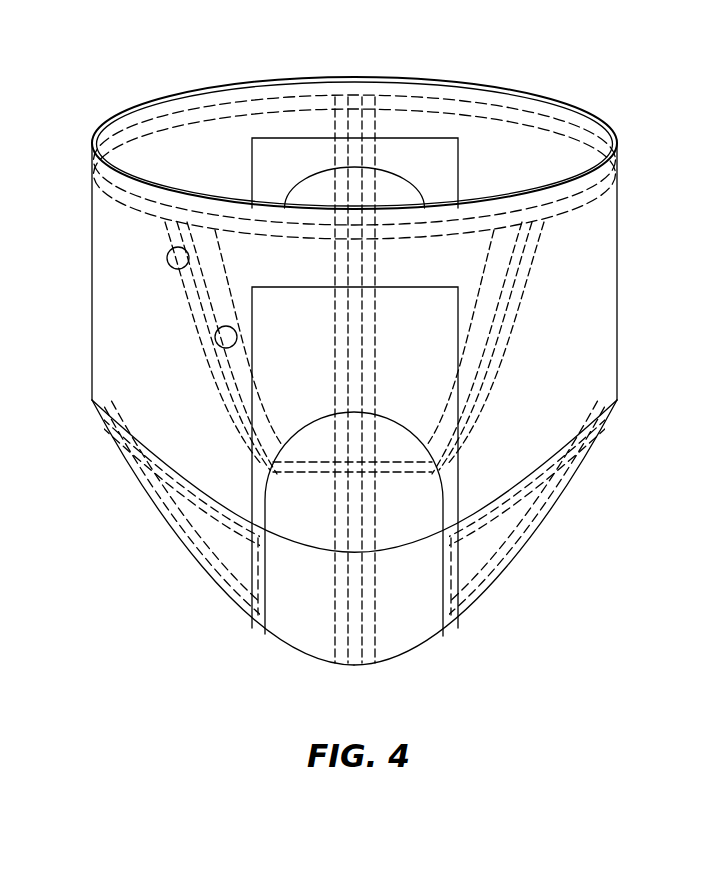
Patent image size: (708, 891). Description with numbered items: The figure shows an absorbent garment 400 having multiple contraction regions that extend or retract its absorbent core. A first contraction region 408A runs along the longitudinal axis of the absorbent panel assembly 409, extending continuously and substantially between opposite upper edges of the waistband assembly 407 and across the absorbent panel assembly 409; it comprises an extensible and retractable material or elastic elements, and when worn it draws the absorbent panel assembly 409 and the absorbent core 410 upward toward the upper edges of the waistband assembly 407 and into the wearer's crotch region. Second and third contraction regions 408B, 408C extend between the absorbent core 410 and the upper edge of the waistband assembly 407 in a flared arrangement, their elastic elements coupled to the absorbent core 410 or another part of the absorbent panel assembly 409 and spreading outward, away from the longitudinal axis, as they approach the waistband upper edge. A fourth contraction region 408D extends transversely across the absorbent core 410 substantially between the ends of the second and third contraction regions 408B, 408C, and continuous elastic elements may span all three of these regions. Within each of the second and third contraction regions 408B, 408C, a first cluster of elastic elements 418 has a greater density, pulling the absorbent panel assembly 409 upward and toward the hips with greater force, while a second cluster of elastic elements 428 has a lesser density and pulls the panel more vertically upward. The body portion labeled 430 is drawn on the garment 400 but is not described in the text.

The absorbent garment 400 is at (103, 44).
The waistband assembly 407 is at (86, 267).
The first contraction region 408A is at (366, 253).
The second contraction region 408B is at (515, 382).
The third contraction region 408C is at (195, 383).
The fourth contraction region 408D is at (398, 482).
The absorbent panel assembly 409 is at (240, 487).
The absorbent core 410 is at (398, 641).
The first cluster of elastic elements 418 is at (167, 259).
The second cluster of elastic elements 428 is at (215, 339).
The side body 430 is at (110, 345).